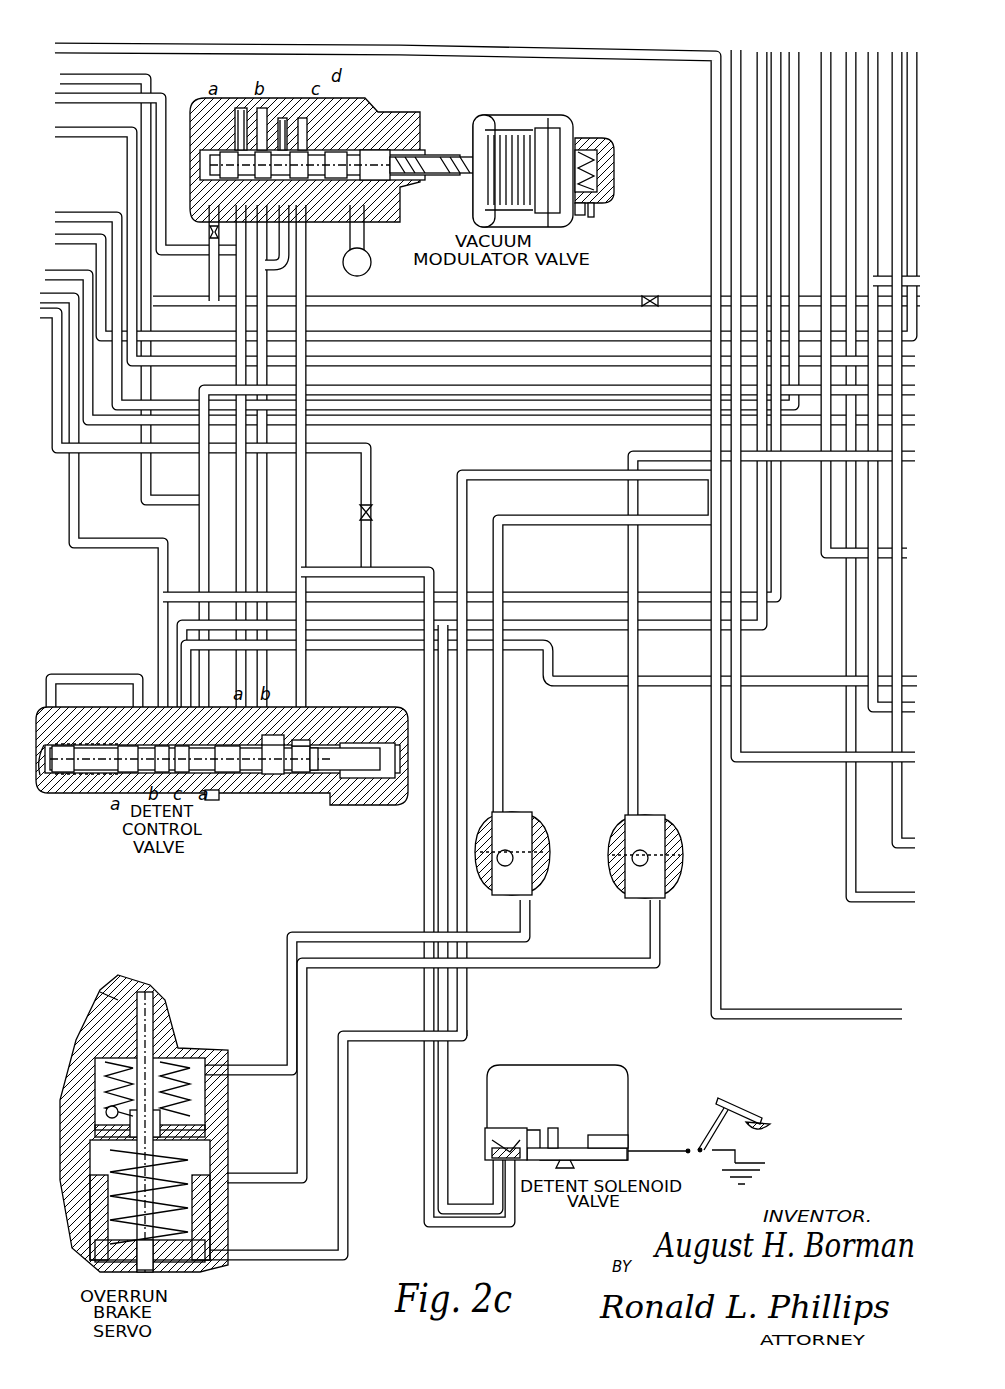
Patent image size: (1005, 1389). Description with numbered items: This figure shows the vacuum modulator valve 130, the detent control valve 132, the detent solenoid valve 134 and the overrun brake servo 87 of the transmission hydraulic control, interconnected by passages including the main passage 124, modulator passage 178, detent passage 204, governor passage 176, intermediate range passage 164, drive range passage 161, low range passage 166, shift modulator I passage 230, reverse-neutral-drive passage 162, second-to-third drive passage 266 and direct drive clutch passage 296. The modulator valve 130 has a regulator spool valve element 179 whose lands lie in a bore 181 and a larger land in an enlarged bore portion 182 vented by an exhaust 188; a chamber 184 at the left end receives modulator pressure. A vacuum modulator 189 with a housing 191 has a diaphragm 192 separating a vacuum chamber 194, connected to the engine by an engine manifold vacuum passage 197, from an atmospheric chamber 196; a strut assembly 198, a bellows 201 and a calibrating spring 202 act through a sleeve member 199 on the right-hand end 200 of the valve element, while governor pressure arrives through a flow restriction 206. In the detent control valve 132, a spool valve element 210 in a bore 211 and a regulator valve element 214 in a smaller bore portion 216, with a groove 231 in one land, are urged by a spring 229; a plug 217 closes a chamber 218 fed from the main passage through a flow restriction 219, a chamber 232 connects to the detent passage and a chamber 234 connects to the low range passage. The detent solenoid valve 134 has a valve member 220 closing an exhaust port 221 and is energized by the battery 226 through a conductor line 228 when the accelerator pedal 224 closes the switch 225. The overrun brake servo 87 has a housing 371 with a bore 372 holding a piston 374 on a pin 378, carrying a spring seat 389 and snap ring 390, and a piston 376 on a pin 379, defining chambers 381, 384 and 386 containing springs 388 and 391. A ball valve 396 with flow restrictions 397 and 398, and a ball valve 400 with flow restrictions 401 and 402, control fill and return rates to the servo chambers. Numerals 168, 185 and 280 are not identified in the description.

The governor passage 176 is at (75, 81).
The main passage 124 is at (157, 97).
The modulator passage 178 is at (112, 140).
The line 168 is at (52, 276).
The detent passage 204 is at (236, 300).
The flow restriction 206 is at (652, 294).
The intermediate range passage 164 is at (797, 90).
The drive range passage 161 is at (80, 430).
The flow restriction 219 is at (374, 510).
The direct drive clutch passage 296 is at (826, 568).
The spring 229 is at (52, 678).
The low range passage 166 is at (858, 1008).
The groove 231 is at (208, 660).
The shift modulator I passage 230 is at (525, 651).
The line 280 is at (873, 712).
The 2-3 drive passage 266 is at (636, 790).
The reverse-neutral-drive passage 162 is at (502, 792).
The restriction 185 is at (210, 226).
The enlarged bore portion 182 is at (296, 215).
The vacuum modulator valve 130 is at (338, 167).
The chamber 184 is at (212, 170).
The bore 181 is at (242, 108).
The regulator spool valve element 179 is at (283, 118).
The right-hand end 200 is at (358, 150).
The sleeve member 199 is at (455, 152).
The exhaust 188 is at (365, 252).
The atmospheric chamber 196 is at (531, 144).
The housing 191 is at (480, 118).
The strut assembly 198 is at (492, 130).
The bellows 201 is at (550, 140).
The vacuum modulator 189 is at (548, 116).
The calibrating spring 202 is at (608, 169).
The vacuum chamber 194 is at (604, 178).
The diaphragm 192 is at (580, 215).
The engine manifold vacuum passage 197 is at (592, 216).
The detent control valve 132 is at (220, 749).
The spool valve element 210 is at (240, 775).
The bore portion 216 is at (92, 776).
The bore 211 is at (285, 740).
The chamber 218 is at (302, 742).
The plug 217 is at (314, 772).
The chamber 232 is at (212, 798).
The chamber 234 is at (48, 795).
The regulator valve element 214 is at (136, 680).
The ball valve 396 is at (527, 863).
The flow restriction 397 is at (502, 868).
The flow restriction 398 is at (538, 885).
The flow restriction 402 is at (644, 871).
The ball valve 400 is at (630, 852).
The flow restriction 401 is at (648, 880).
The overrun brake servo 87 is at (161, 1110).
The chamber 381 is at (190, 1068).
The chamber 384 is at (206, 1130).
The housing 371 is at (215, 1112).
The bore 372 is at (212, 1220).
The pin 378 is at (152, 998).
The spring seat 389 is at (105, 1082).
The snap ring 390 is at (104, 1112).
The pin 379 is at (120, 1205).
The spring 391 is at (95, 1252).
The spring 388 is at (108, 1000).
The piston 374 is at (215, 1078).
The piston 376 is at (224, 1184).
The chamber 386 is at (200, 1256).
The detent solenoid valve 134 is at (568, 1096).
The valve member 220 is at (500, 1138).
The exhaust port 221 is at (505, 1158).
The conductor line 228 is at (673, 1148).
The switch 225 is at (700, 1130).
The accelerator pedal 224 is at (730, 1103).
The battery 226 is at (766, 1160).